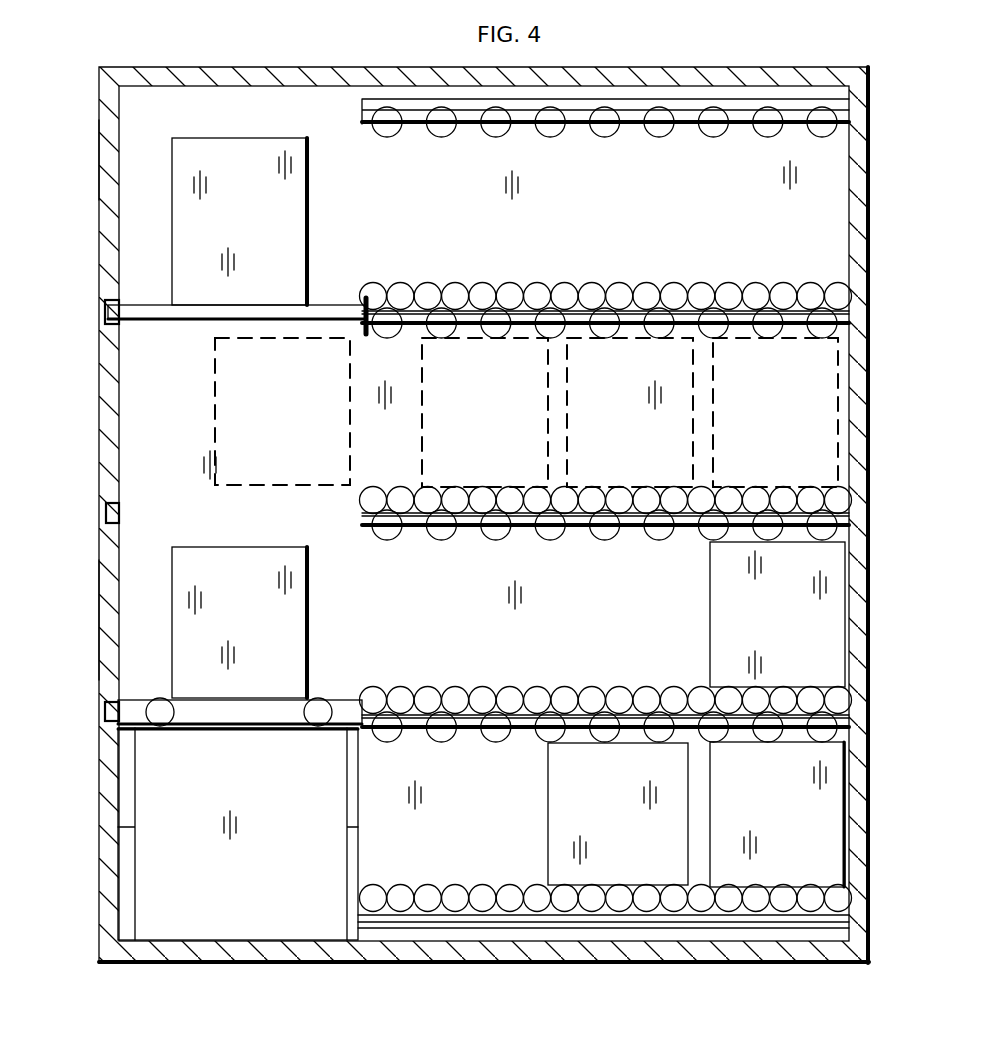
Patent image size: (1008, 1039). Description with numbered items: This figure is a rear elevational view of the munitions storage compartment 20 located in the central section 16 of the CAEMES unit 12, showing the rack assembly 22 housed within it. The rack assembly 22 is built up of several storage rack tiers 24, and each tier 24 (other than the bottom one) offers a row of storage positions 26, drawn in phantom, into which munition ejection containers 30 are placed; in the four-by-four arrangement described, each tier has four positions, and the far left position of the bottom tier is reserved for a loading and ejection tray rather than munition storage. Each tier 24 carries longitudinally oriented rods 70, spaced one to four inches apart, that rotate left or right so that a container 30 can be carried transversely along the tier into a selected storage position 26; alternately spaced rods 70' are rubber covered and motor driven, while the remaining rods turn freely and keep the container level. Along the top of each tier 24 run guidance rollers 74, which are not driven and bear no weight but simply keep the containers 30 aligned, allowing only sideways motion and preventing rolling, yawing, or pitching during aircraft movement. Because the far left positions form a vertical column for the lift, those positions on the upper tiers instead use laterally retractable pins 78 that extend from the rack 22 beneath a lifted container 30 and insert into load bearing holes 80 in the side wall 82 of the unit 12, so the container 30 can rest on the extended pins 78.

The CAEMES unit 12 is at (360, 63).
The central section 16 is at (98, 145).
The munitions storage compartment 20 is at (207, 105).
The rack assembly 22 is at (808, 280).
The storage rack tier 24 is at (825, 203).
The storage position 26 is at (298, 420).
The munition ejection container 30 is at (352, 175).
The rods 70 is at (636, 597).
The alternately spaced rods 70' is at (637, 595).
The guidance rollers 74 is at (605, 131).
The retractable pins 78 is at (122, 322).
The load bearing hole 80 is at (108, 300).
The side wall 82 is at (99, 622).